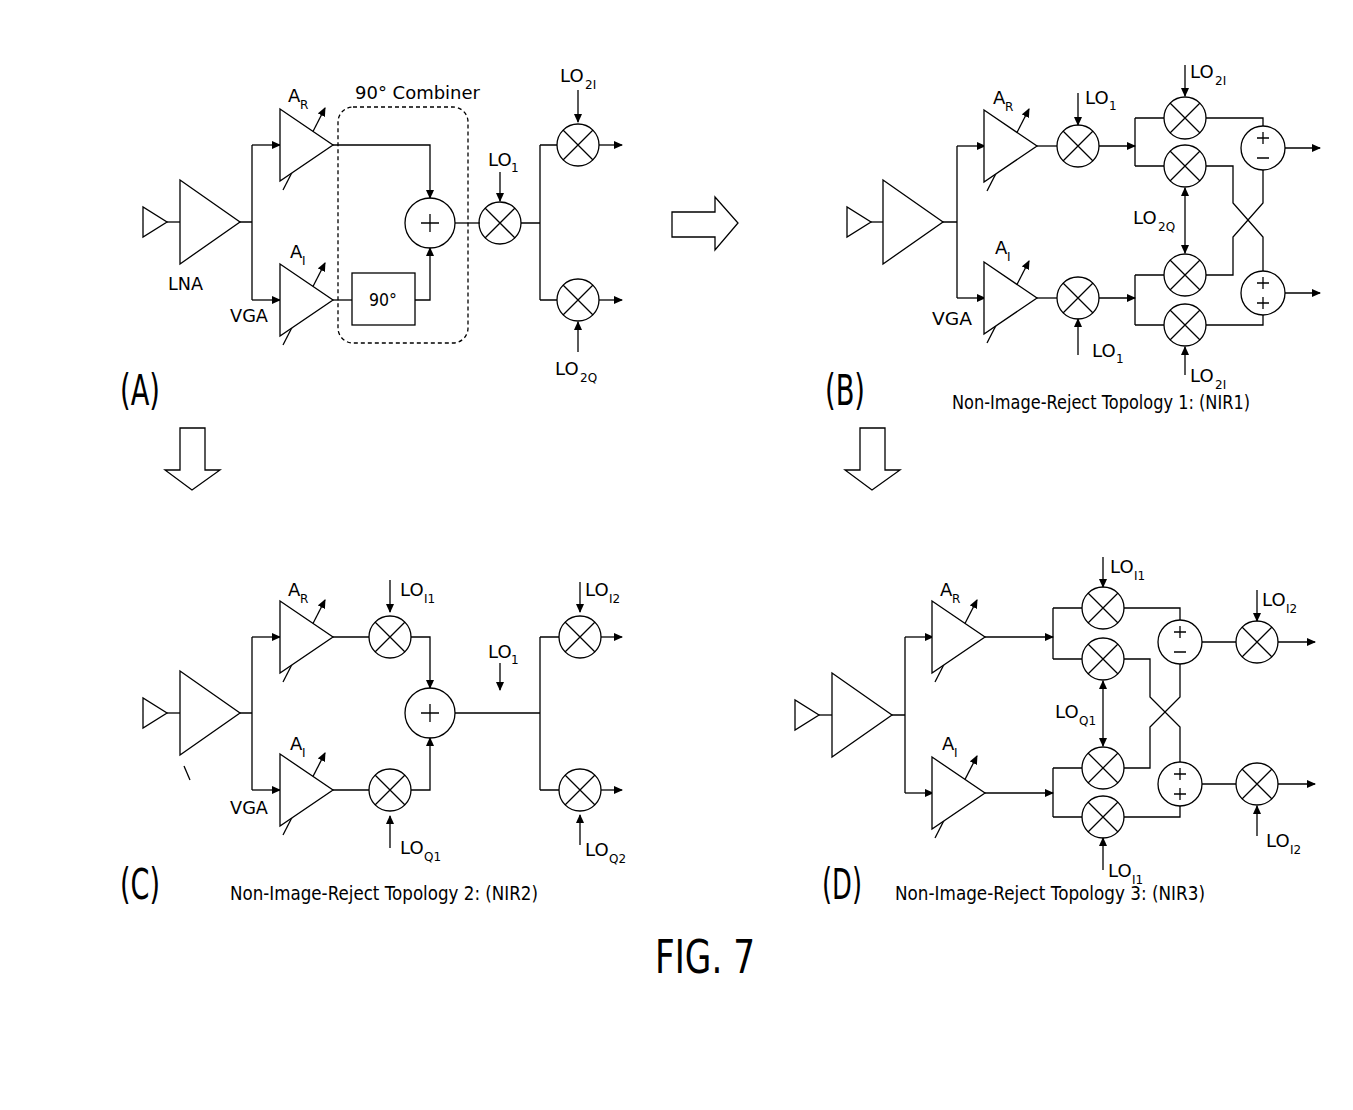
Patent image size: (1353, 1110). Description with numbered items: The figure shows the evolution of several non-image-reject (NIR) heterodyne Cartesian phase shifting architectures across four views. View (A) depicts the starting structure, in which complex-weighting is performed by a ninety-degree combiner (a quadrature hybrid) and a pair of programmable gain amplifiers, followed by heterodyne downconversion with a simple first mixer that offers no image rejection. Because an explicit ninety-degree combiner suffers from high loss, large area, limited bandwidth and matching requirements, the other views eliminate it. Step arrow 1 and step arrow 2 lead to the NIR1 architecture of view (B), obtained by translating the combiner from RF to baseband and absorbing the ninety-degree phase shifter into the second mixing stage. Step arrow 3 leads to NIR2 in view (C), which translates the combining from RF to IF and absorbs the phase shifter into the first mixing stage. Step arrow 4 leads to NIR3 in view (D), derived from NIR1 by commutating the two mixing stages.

The step 1: translating combining from RF to BB 1 is at (697, 177).
The step 2: absorb 90 degree shifter inside mixing stage 2 is at (708, 315).
The step 3: translate combining RF to IF1, absorb 90 degree in 1st stage mixing 3 is at (336, 455).
The step 4: swap 1st and 2nd stage mixing operation 4 is at (1065, 459).